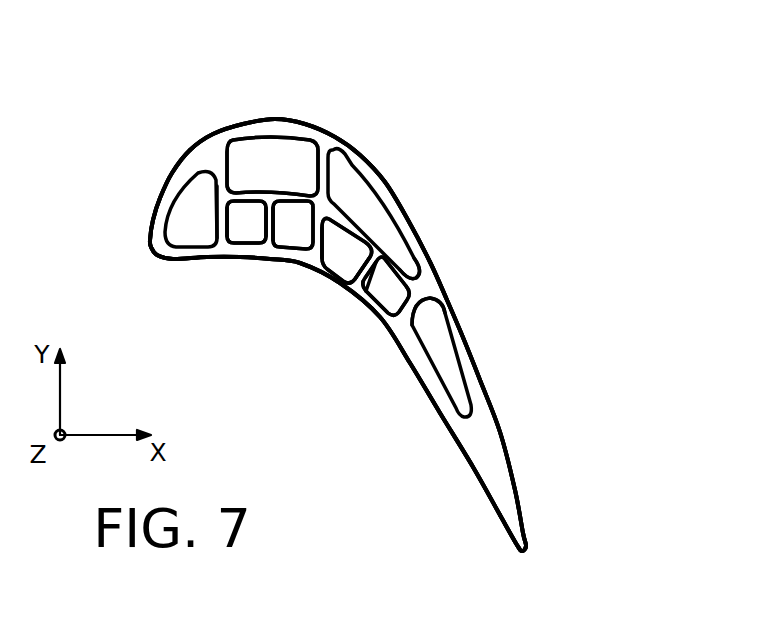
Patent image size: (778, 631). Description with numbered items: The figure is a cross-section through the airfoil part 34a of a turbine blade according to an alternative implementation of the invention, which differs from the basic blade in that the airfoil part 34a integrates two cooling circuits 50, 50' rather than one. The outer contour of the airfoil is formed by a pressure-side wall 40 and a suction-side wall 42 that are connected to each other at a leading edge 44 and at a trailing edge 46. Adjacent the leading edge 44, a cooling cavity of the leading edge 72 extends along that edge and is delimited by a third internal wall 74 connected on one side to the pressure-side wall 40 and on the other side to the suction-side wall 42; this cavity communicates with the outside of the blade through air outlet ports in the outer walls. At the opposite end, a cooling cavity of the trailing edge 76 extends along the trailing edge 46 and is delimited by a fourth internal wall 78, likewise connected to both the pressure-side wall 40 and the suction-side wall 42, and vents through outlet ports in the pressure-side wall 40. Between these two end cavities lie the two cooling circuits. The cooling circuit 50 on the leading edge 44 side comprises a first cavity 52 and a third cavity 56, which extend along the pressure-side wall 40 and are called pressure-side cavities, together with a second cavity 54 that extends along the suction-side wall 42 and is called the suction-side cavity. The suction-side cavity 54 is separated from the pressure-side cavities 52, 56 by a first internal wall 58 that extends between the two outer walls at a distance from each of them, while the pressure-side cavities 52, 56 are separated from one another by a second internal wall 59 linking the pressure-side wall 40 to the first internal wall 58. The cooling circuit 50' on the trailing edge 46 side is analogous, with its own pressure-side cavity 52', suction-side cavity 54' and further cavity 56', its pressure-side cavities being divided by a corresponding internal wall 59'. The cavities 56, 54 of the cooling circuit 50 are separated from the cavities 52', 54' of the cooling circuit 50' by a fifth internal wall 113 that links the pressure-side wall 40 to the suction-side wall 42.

The airfoil part 34a is at (598, 253).
The pressure-side wall 40 is at (447, 395).
The suction-side wall 42 is at (381, 185).
The leading edge 44 is at (150, 238).
The trailing edge 46 is at (521, 550).
The cooling circuit 50 is at (313, 132).
The cooling circuit 50' is at (321, 320).
The first cavity 52 is at (264, 150).
The pressure-side cavity 52' is at (335, 300).
The second cavity 54 is at (287, 126).
The suction-side cavity 54' is at (293, 287).
The third cavity 56 is at (333, 153).
The cavity 56' is at (381, 320).
The first internal wall 58 is at (380, 248).
The second internal wall 59 is at (242, 261).
The internal wall 59' is at (424, 261).
The cooling cavity of the leading edge 72 is at (183, 217).
The third internal wall 74 is at (220, 224).
The cooling cavity of the trailing edge 76 is at (453, 363).
The fourth internal wall 78 is at (408, 314).
The fifth internal wall 113 is at (287, 262).